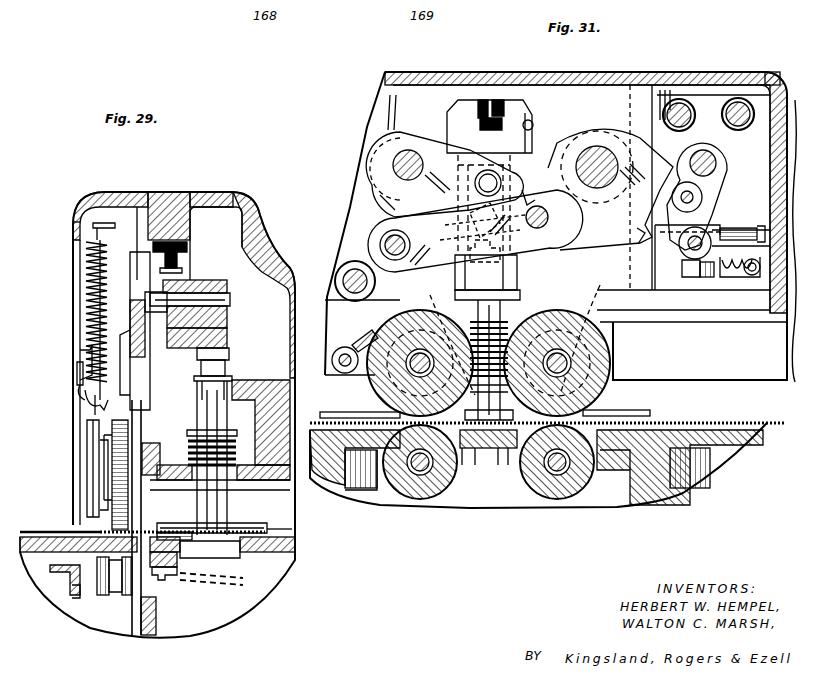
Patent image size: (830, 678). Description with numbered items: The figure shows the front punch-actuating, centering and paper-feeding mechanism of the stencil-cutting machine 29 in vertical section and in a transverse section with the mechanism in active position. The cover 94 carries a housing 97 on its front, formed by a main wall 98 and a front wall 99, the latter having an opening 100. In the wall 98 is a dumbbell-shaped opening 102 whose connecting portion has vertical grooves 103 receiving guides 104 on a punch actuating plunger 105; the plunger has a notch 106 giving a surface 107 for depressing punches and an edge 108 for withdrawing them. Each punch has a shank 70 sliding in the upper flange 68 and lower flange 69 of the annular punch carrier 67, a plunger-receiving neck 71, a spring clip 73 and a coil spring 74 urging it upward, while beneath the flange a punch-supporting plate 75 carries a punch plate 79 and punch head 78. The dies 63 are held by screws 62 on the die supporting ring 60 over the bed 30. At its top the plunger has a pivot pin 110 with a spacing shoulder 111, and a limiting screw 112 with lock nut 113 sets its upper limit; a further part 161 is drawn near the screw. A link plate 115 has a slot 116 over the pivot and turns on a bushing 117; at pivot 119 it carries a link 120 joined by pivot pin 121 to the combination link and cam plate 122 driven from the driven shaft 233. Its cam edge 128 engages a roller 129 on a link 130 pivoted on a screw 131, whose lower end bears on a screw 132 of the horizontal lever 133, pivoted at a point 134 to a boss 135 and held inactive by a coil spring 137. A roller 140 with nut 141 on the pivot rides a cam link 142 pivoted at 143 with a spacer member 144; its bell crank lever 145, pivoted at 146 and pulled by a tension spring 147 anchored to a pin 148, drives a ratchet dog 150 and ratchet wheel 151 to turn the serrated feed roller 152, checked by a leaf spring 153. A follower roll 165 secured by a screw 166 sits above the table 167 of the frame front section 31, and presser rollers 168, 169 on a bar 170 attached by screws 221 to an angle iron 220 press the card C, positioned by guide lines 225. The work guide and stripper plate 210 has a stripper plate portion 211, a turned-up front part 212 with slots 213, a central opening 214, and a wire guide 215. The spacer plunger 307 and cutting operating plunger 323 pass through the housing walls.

In FIG. 31, the machine 29 is at (365, 105).
In FIG. 31, the bed 30 is at (370, 505).
In FIG. 31, the front section of the frame 31 is at (712, 450).
In FIG. 29, the die supporting ring 60 is at (132, 605).
In FIG. 29, the screws 62 is at (165, 578).
In FIG. 29, the dies 63 is at (295, 547).
In FIG. 29, the annular punch carrier 67 is at (295, 400).
In FIG. 29, the upper flange 68 is at (290, 385).
In FIG. 31, the upper flange 68 is at (530, 264).
In FIG. 29, the lower flange 69 is at (188, 465).
In FIG. 29, the punch shank 70 is at (228, 425).
In FIG. 31, the punch shank 70 is at (505, 300).
In FIG. 29, the plunger-receiving neck 71 is at (235, 380).
In FIG. 31, the plunger-receiving neck 71 is at (455, 240).
In FIG. 29, the spring clip 73 is at (187, 432).
In FIG. 31, the spring clip 73 is at (545, 330).
In FIG. 29, the coil spring 74 is at (188, 453).
In FIG. 31, the coil spring 74 is at (489, 320).
In FIG. 29, the punch-supporting plate 75 is at (264, 525).
In FIG. 31, the punch-supporting plate 75 is at (470, 450).
In FIG. 29, the punch head 78 is at (218, 545).
In FIG. 29, the punch plate 79 is at (240, 523).
In FIG. 29, the cover 94 is at (262, 215).
In FIG. 29, the housing 97 is at (225, 192).
In FIG. 29, the main wall 98 is at (196, 225).
In FIG. 29, the front wall 99 is at (73, 235).
In FIG. 29, the opening 100 is at (78, 255).
In FIG. 29, the opening 102 is at (252, 250).
In FIG. 31, the opening 102 is at (535, 125).
In FIG. 29, the vertical grooves 103 is at (203, 297).
In FIG. 31, the vertical grooves 103 is at (520, 150).
In FIG. 29, the guides 104 is at (226, 281).
In FIG. 31, the guides 104 is at (420, 147).
In FIG. 29, the punch actuating plunger 105 is at (228, 312).
In FIG. 31, the punch actuating plunger 105 is at (525, 255).
In FIG. 29, the notch 106 is at (226, 365).
In FIG. 29, the surface 107 is at (230, 350).
In FIG. 31, the surface 107 is at (470, 213).
In FIG. 29, the edge 108 is at (233, 378).
In FIG. 29, the pivot pin 110 is at (145, 300).
In FIG. 31, the pivot pin 110 is at (527, 192).
In FIG. 29, the spacing shoulder 111 is at (130, 285).
In FIG. 29, the limiting screw 112 is at (183, 267).
In FIG. 31, the limiting screw 112 is at (480, 128).
In FIG. 29, the lock nut 113 is at (188, 246).
In FIG. 31, the lock nut 113 is at (470, 112).
In FIG. 29, the link plate 115 is at (137, 207).
In FIG. 31, the link plate 115 is at (375, 192).
In FIG. 29, the slot 116 is at (100, 300).
In FIG. 31, the slot 116 is at (445, 184).
In FIG. 31, the bushing 117 is at (395, 160).
In FIG. 29, the pivot 119 is at (77, 372).
In FIG. 31, the pivot 119 is at (380, 242).
In FIG. 29, the link 120 is at (228, 330).
In FIG. 31, the link 120 is at (385, 222).
In FIG. 31, the pivot pin 121 is at (560, 219).
In FIG. 31, the combination link and cam plate 122 is at (573, 140).
In FIG. 31, the cam edge 128 is at (637, 240).
In FIG. 31, the roller 129 is at (703, 200).
In FIG. 31, the link 130 is at (722, 175).
In FIG. 31, the screw 131 is at (715, 158).
In FIG. 31, the screw 132 is at (718, 235).
In FIG. 31, the horizontal lever 133 is at (750, 228).
In FIG. 31, the spring 134 is at (725, 278).
In FIG. 31, the boss 135 is at (680, 264).
In FIG. 31, the coil spring 137 is at (745, 292).
In FIG. 29, the roller 140 is at (130, 320).
In FIG. 29, the nut 141 is at (80, 350).
In FIG. 29, the cam link 142 is at (85, 437).
In FIG. 31, the pivot 143 is at (340, 268).
In FIG. 31, the spacer member 144 is at (360, 256).
In FIG. 29, the bell crank lever 145 is at (100, 478).
In FIG. 29, the pivot 146 is at (87, 432).
In FIG. 29, the tension spring 147 is at (86, 270).
In FIG. 29, the pin 148 is at (118, 195).
In FIG. 29, the ratchet dog 150 is at (100, 497).
In FIG. 29, the ratchet wheel 151 is at (104, 458).
In FIG. 29, the feed roller 152 is at (112, 450).
In FIG. 31, the feed roller 152 is at (380, 378).
In FIG. 29, the leaf spring 153 is at (124, 425).
In FIG. 31, the leaf spring 153 is at (365, 340).
In FIG. 31, the pin 161 is at (526, 130).
In FIG. 31, the follower roll 165 is at (590, 318).
In FIG. 31, the screw 166 is at (608, 362).
In FIG. 29, the table 167 is at (45, 552).
In FIG. 31, the table 167 is at (600, 450).
In FIG. 29, the presser roller 168 is at (120, 598).
In FIG. 31, the presser roller 168 is at (430, 500).
In FIG. 31, the presser roller 169 is at (570, 495).
In FIG. 29, the bar 170 is at (103, 596).
In FIG. 29, the work guide and stripper plate 210 is at (146, 525).
In FIG. 31, the work guide and stripper plate 210 is at (585, 352).
In FIG. 29, the stripper plate portion 211 is at (292, 526).
In FIG. 29, the front part 212 is at (148, 484).
In FIG. 31, the front part 212 is at (590, 395).
In FIG. 31, the slots 213 is at (510, 334).
In FIG. 29, the central opening 214 is at (165, 530).
In FIG. 31, the wire guide 215 is at (640, 410).
In FIG. 29, the angle iron 220 is at (55, 575).
In FIG. 29, the screw 221 is at (75, 590).
In FIG. 29, the guide lines 225 is at (95, 533).
In FIG. 31, the driven shaft 233 is at (600, 150).
In FIG. 31, the spacer plunger 307 is at (740, 98).
In FIG. 31, the cutting operating plunger 323 is at (680, 99).
In FIG. 31, the card C is at (762, 423).